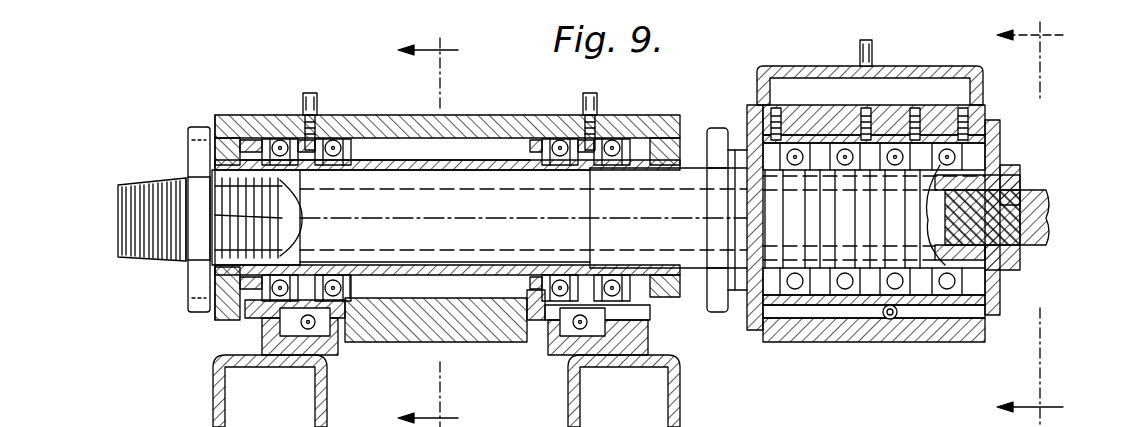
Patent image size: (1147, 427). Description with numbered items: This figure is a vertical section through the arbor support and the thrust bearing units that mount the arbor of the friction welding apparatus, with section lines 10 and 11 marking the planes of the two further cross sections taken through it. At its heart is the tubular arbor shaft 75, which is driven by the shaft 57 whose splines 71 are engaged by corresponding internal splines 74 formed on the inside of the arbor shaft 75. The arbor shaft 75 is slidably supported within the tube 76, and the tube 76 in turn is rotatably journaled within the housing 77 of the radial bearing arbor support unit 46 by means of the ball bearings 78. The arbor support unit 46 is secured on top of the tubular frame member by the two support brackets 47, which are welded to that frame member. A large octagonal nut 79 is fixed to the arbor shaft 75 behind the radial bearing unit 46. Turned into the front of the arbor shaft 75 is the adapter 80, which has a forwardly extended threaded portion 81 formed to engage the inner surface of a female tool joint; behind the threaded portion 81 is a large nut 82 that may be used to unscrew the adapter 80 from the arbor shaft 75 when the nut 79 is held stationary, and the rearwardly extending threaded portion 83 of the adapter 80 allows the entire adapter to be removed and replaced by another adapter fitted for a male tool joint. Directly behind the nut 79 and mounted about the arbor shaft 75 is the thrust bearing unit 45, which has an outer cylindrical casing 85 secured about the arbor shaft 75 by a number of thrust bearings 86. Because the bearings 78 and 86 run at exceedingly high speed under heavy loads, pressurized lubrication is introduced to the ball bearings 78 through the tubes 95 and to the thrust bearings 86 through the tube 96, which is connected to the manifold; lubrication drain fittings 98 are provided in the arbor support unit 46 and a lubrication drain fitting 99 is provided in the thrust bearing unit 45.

The section line 10— 10 is at (436, 225).
The section line 11— 11 is at (1045, 224).
The thrust bearing unit 45 is at (826, 48).
The radial bearing arbor support unit 46 is at (414, 104).
The support brackets 47 is at (318, 384).
The shaft 57 is at (1050, 222).
The splines 71 is at (1050, 206).
The internal splines 74 is at (1020, 180).
The tubular arbor shaft 75 is at (512, 206).
The tube 76 is at (470, 161).
The housing 77 is at (490, 115).
The ball bearings 78 is at (280, 128).
The octagonal nut 79 is at (718, 128).
The adapter 80 is at (156, 161).
The forwardly extended threaded portion 81 is at (150, 253).
The nut 82 is at (200, 301).
The rearwardly extending threaded portion 83 is at (298, 235).
The outer cylindrical casing 85 is at (886, 108).
The thrust bearings 86 is at (890, 198).
The tubes 95 is at (309, 92).
The tube 96 is at (863, 50).
The lubrication drain fittings 98 is at (333, 343).
The lubrication drain fitting 99 is at (890, 321).